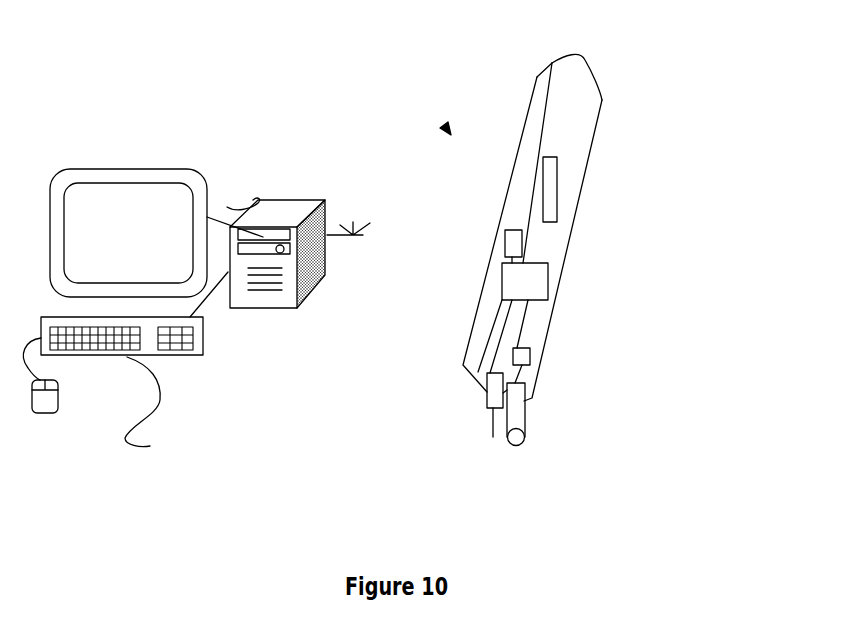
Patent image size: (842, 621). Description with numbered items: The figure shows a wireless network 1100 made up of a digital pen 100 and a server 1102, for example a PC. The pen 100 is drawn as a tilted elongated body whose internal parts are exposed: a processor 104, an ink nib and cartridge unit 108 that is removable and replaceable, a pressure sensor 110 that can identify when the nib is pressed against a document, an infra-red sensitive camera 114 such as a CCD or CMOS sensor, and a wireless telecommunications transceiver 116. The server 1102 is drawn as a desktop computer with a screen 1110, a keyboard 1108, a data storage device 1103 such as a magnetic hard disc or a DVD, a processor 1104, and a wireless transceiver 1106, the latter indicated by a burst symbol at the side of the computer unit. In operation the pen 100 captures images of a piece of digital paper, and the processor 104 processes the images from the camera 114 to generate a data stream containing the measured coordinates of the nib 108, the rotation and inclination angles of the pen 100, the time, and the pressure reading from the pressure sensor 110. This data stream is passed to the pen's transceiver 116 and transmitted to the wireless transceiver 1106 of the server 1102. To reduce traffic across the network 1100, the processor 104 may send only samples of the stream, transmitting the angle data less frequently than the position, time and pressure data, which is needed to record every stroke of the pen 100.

The digital pen 100 is at (602, 150).
The processor 104 is at (547, 270).
The ink nib and cartridge unit 108 is at (528, 417).
The pressure sensor 110 is at (530, 357).
The infra-red sensitive camera 114 is at (493, 437).
The wireless telecommunications transceiver 116 is at (552, 63).
The wireless network 1100 is at (446, 128).
The server 1102 is at (283, 197).
The data storage device 1103 is at (258, 203).
The processor 1104 is at (284, 251).
The wireless transceiver 1106 is at (365, 233).
The keyboard 1108 is at (142, 416).
The screen 1110 is at (92, 208).